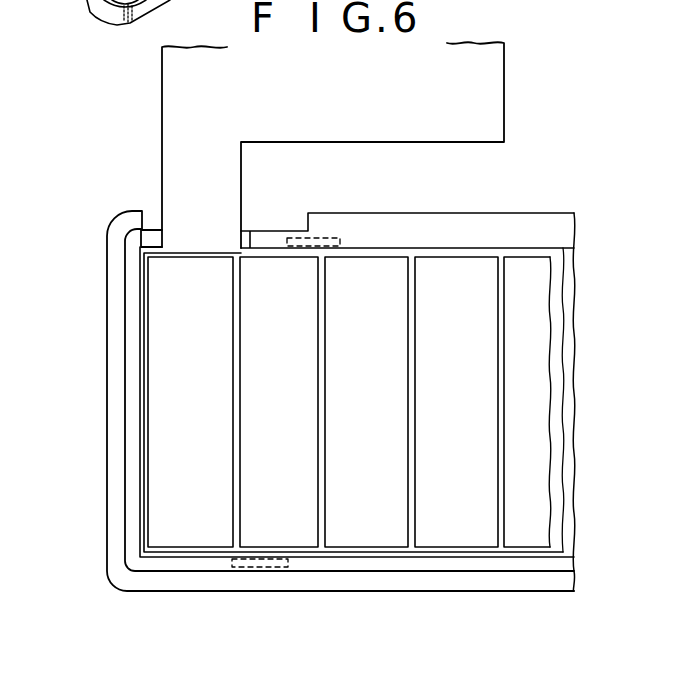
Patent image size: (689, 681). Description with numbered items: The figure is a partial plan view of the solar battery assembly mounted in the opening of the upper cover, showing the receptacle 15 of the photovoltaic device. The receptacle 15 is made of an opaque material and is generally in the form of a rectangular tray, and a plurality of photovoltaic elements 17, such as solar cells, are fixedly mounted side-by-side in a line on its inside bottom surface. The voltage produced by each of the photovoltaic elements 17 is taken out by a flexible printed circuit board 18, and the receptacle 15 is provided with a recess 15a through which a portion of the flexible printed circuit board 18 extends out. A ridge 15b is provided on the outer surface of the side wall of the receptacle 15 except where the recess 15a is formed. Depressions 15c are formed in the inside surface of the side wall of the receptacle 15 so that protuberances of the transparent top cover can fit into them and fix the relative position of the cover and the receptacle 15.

The receptacle 15 is at (130, 388).
The recess 15a is at (247, 231).
The ridge 15b is at (112, 462).
The depressions 15c is at (333, 247).
The photovoltaic elements 17 is at (392, 530).
The flexible printed circuit board 18 is at (372, 125).